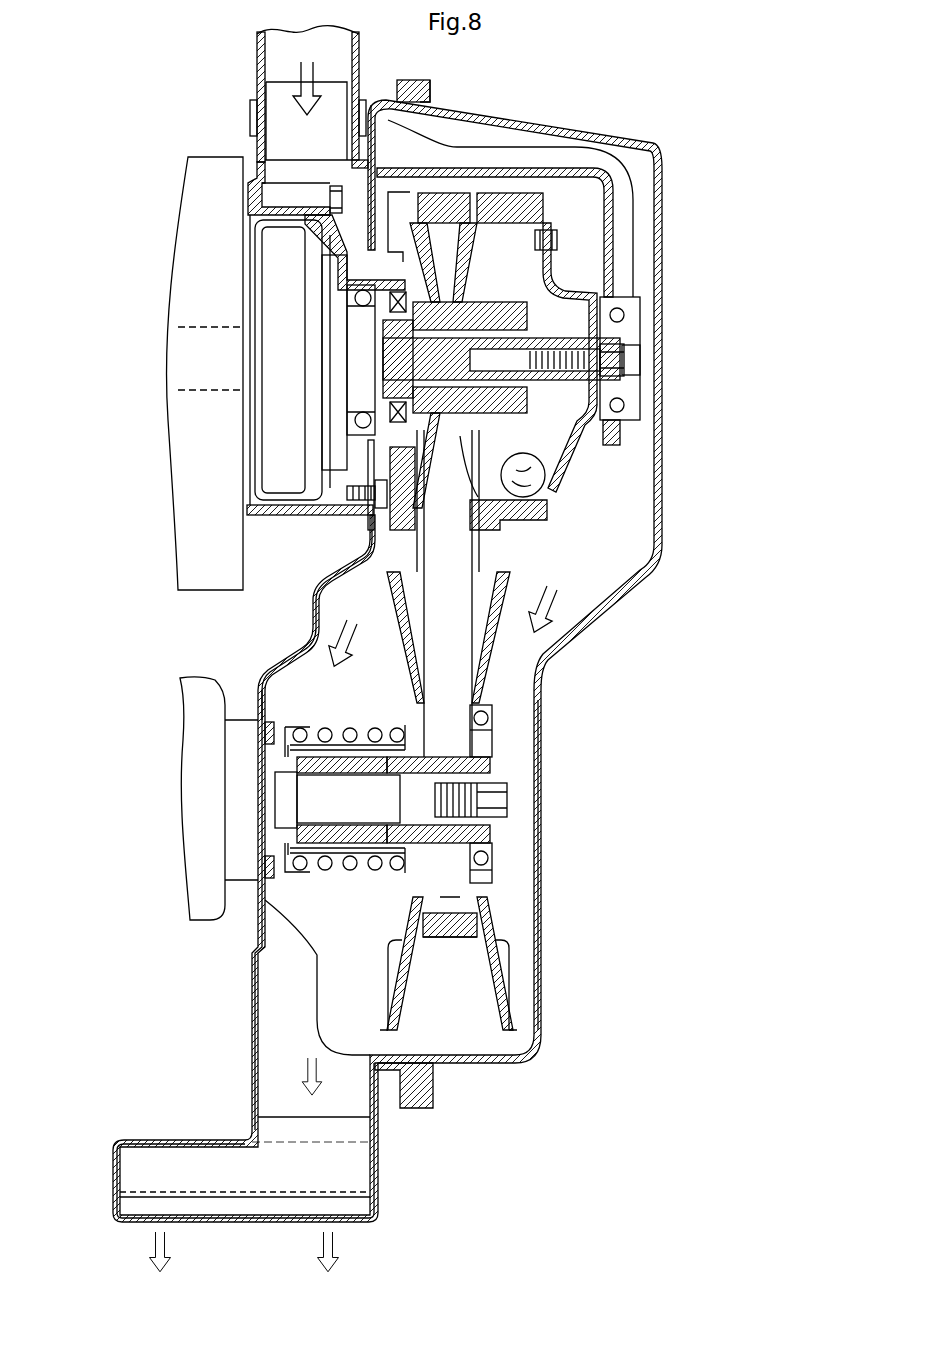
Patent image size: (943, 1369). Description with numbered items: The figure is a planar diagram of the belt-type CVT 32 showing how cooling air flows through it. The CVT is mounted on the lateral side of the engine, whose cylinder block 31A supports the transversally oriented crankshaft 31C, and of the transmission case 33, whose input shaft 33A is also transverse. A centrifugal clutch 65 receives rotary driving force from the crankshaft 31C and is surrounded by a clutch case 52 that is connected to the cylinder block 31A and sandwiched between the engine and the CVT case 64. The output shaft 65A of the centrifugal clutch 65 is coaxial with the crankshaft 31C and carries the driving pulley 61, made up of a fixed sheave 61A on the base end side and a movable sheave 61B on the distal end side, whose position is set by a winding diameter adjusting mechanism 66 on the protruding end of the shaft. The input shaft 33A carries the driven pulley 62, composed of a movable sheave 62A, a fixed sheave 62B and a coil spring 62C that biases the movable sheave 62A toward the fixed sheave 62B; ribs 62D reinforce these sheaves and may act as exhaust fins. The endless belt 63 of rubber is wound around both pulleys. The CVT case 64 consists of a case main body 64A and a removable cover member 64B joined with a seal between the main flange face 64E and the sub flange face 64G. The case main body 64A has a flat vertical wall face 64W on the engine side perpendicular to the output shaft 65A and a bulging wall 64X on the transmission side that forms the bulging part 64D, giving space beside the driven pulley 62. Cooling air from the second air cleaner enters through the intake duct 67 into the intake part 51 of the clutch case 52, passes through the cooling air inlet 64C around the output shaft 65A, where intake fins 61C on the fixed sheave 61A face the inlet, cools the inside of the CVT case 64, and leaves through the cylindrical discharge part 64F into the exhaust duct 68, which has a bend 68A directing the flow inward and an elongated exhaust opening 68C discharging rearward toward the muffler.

The belt-type CVT 32 is at (464, 625).
The CVT case 64 is at (421, 625).
The case main body 64A is at (312, 613).
The cover member 64B is at (530, 805).
The cooling air inlet 64C is at (385, 453).
The bulging part 64D is at (285, 700).
The main flange face 64E is at (400, 80).
The discharge part 64F is at (277, 1035).
The sub flange face 64G is at (430, 85).
The vertical wall face 64W is at (370, 222).
The bulging wall 64X is at (300, 945).
The intake duct 67 is at (262, 37).
The intake part 51 is at (292, 121).
The cylinder block 31A is at (143, 373).
The crankshaft 31C is at (215, 390).
The centrifugal clutch 65 is at (250, 447).
The output shaft 65A is at (478, 367).
The clutch case 52 is at (278, 515).
The driving pulley 61 is at (463, 350).
The fixed sheave 61A is at (400, 545).
The movable sheave 61B is at (492, 528).
The intake fins 61C is at (397, 515).
The winding diameter adjusting mechanism 66 is at (553, 497).
The driven pulley 62 is at (470, 733).
The movable sheave 62A is at (412, 918).
The fixed sheave 62B is at (490, 922).
The coil spring 62C is at (363, 878).
The ribs 62D is at (506, 962).
The endless belt 63 is at (461, 942).
The transmission case 33 is at (197, 720).
The input shaft 33A is at (340, 805).
The exhaust duct 68 is at (287, 1167).
The bend 68A is at (171, 1138).
The exhaust opening 68C is at (207, 1212).